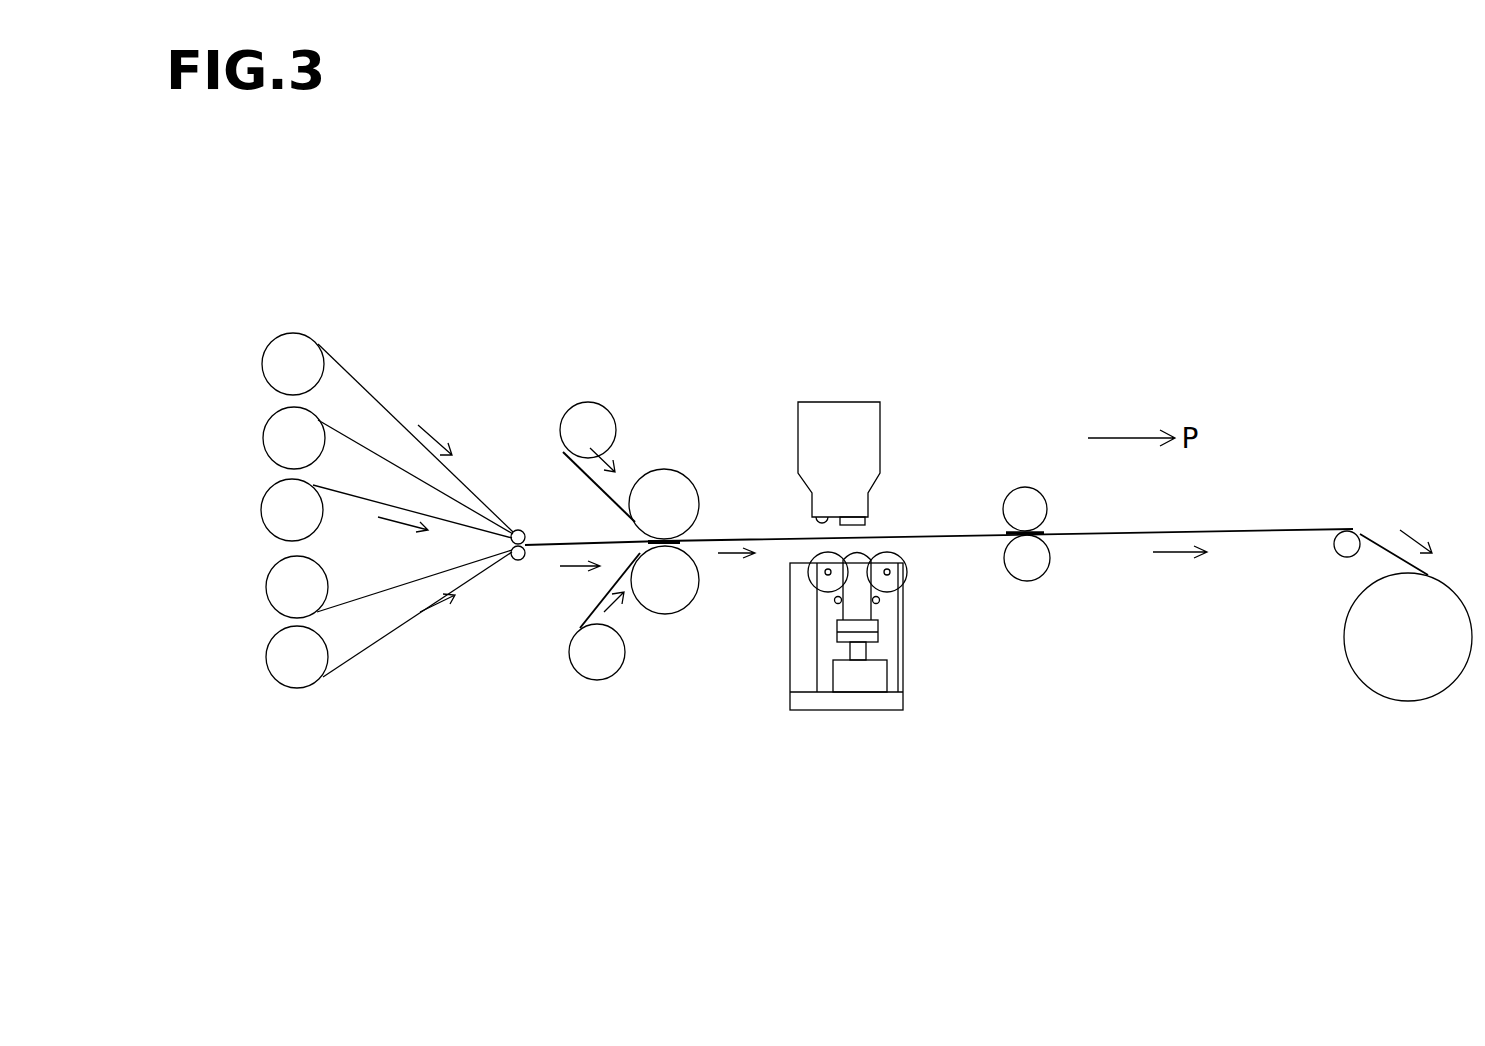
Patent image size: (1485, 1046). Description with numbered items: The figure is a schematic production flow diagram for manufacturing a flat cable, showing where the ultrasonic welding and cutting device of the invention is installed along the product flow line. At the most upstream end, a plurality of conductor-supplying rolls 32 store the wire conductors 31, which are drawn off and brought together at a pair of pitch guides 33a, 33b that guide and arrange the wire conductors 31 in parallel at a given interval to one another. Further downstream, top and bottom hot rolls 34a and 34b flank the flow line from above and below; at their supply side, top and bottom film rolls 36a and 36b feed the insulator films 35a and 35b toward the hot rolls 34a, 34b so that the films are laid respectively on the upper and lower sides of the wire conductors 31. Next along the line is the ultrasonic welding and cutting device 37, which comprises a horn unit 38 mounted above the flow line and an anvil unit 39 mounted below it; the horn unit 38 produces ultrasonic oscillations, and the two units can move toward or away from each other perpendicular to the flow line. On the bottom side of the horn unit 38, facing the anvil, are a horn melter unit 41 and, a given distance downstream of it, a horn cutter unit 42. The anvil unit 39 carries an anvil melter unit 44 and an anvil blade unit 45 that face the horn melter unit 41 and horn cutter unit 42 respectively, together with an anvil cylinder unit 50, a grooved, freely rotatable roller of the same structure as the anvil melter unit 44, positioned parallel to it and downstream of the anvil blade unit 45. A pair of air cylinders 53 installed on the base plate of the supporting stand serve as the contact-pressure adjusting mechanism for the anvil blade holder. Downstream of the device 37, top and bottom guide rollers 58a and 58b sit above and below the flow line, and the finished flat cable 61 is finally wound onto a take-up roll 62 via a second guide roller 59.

The wire conductor 31 is at (367, 388).
The conductor-supplying roll 32 is at (290, 345).
The pitch guide 33a is at (514, 529).
The pitch guide 33b is at (518, 561).
The top hot roll 34a is at (672, 480).
The bottom hot roll 34b is at (690, 592).
The insulator film 35a is at (592, 483).
The insulator film 35b is at (575, 595).
The top film roll 36a is at (592, 415).
The bottom film roll 36b is at (612, 672).
The ultrasonic welding and cutting device 37 is at (840, 413).
The horn unit 38 is at (880, 410).
The anvil unit 39 is at (863, 667).
The horn melter unit 41 is at (808, 528).
The horn cutter unit 42 is at (868, 530).
The anvil melter unit 44 is at (810, 552).
The anvil blade unit 45 is at (857, 607).
The anvil cylinder unit 50 is at (907, 572).
The air cylinder 53 is at (866, 682).
The top guide roller 58a is at (1020, 488).
The bottom guide roller 58b is at (1027, 574).
The second guide roller 59 is at (1340, 553).
The flat cable 61 is at (1250, 528).
The take-up roll 62 is at (1408, 685).